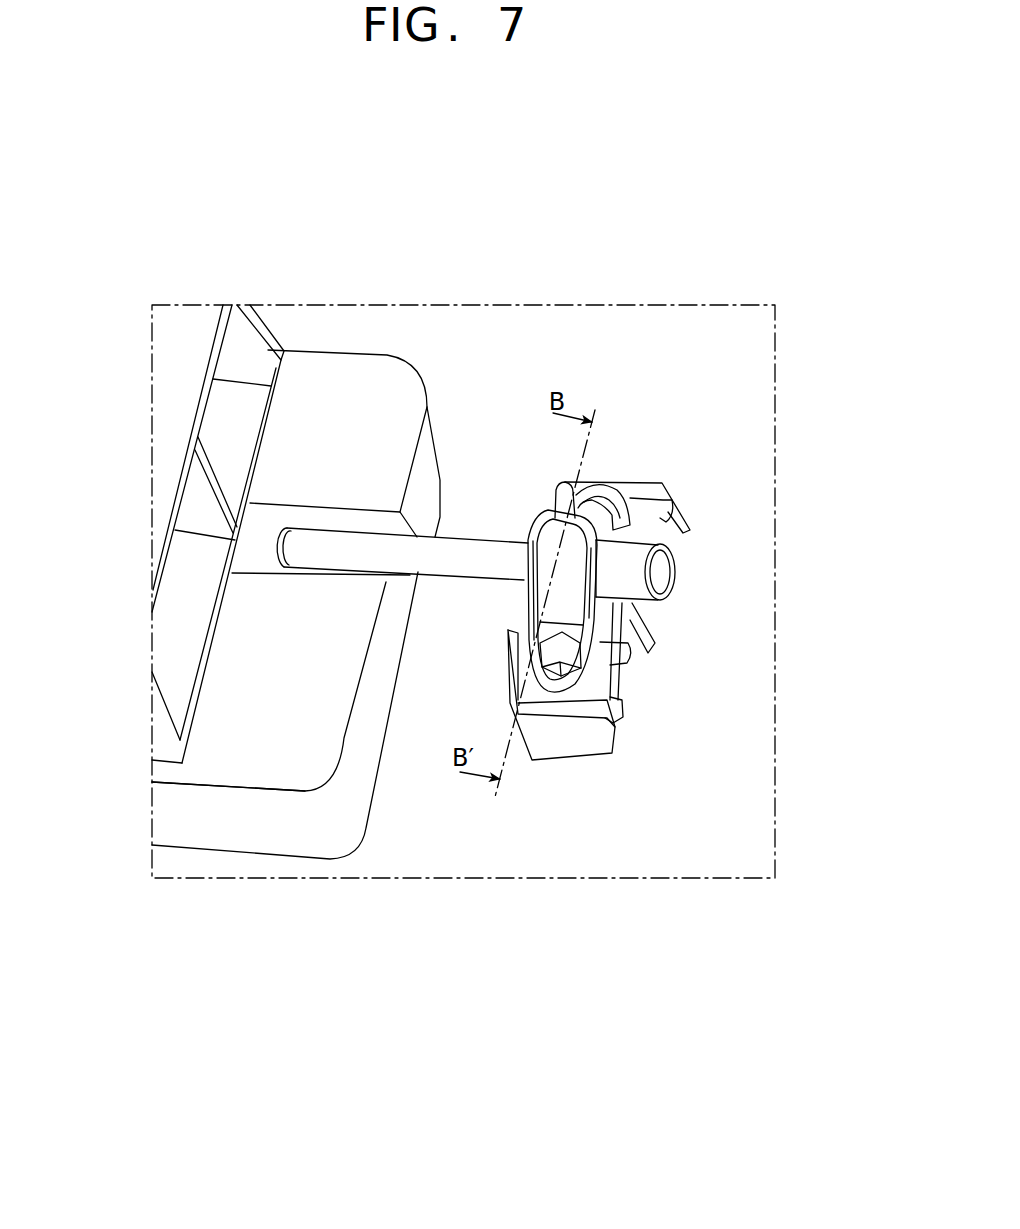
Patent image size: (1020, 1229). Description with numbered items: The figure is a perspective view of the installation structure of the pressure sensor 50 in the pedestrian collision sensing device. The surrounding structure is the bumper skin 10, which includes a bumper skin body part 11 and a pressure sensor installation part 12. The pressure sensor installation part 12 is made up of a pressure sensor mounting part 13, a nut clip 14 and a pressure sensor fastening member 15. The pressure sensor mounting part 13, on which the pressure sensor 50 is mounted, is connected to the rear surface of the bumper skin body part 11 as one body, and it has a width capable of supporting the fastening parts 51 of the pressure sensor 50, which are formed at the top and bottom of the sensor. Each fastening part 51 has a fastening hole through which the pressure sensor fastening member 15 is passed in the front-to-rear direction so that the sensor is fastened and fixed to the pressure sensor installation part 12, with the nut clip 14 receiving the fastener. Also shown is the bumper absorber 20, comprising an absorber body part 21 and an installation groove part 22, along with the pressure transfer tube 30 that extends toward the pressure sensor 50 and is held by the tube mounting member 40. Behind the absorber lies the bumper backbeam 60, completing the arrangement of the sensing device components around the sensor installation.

The bumper skin 10 is at (510, 679).
The bumper skin body part 11 is at (750, 768).
The pressure sensor installation part 12 is at (690, 573).
The pressure sensor mounting part 13 is at (620, 620).
The nut clip 14 is at (598, 688).
The pressure sensor fastening member 15 is at (590, 513).
The bumper absorber 20 is at (253, 588).
The absorber body part 21 is at (238, 765).
The installation groove part 22 is at (323, 521).
The pressure transfer tube 30 is at (467, 553).
The tube mounting member 40 is at (253, 553).
The pressure sensor 50 is at (678, 553).
The fastening part 51 is at (615, 500).
The bumper backbeam 60 is at (176, 396).